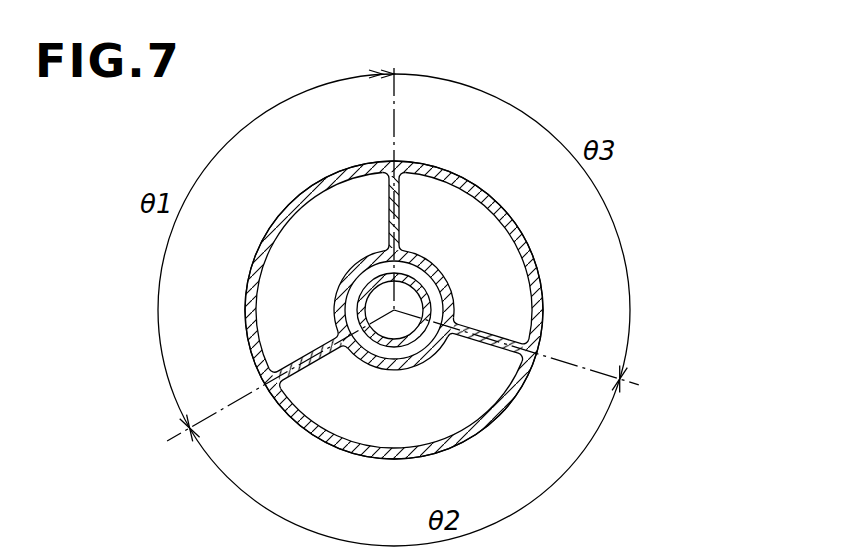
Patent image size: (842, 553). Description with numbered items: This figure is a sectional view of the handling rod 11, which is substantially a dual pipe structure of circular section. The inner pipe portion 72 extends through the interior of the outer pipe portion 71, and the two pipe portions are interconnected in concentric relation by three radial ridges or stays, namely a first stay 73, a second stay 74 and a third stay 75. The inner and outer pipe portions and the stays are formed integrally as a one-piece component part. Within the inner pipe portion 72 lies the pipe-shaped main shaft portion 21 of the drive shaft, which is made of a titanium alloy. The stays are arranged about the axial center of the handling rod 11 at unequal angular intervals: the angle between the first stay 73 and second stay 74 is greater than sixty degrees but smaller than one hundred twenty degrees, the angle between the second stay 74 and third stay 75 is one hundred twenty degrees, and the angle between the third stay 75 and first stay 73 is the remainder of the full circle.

The handling rod 11 is at (537, 258).
The outer pipe portion 71 is at (498, 203).
The inner pipe portion 72 is at (435, 262).
The main shaft portion 21 is at (432, 303).
The first stay 73 is at (389, 214).
The second stay 74 is at (310, 367).
The third stay 75 is at (472, 343).